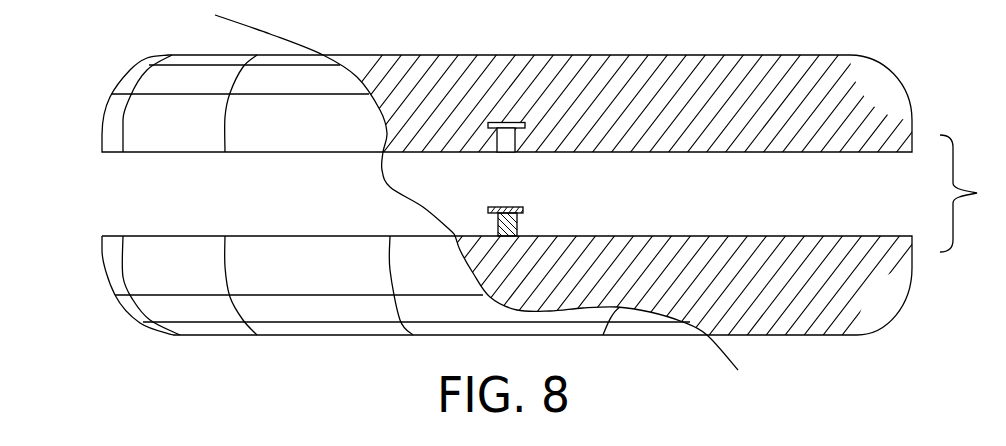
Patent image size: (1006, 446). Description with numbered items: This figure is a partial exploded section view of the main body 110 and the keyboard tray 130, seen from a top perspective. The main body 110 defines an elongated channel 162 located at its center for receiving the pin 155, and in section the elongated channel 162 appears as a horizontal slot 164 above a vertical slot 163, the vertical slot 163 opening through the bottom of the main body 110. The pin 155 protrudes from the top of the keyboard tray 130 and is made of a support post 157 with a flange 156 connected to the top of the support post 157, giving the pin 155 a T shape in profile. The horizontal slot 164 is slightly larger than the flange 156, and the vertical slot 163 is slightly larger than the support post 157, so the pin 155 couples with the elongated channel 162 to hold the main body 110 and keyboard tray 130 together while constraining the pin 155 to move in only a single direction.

The main body 110 is at (873, 62).
The keyboard tray 130 is at (882, 320).
The pin 155 is at (544, 204).
The flange 156 is at (507, 207).
The support post 157 is at (517, 218).
The elongated channel 162 is at (572, 97).
The vertical slot 163 is at (511, 150).
The horizontal slot 164 is at (525, 126).